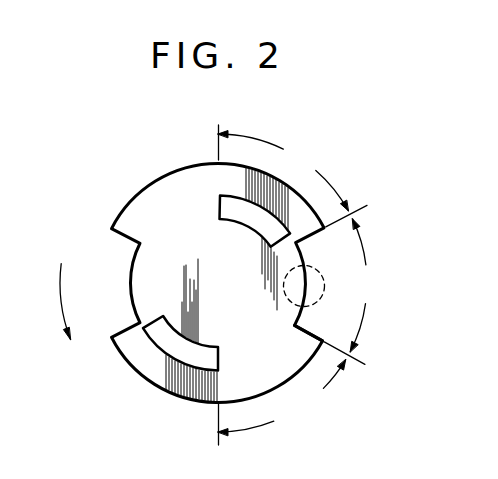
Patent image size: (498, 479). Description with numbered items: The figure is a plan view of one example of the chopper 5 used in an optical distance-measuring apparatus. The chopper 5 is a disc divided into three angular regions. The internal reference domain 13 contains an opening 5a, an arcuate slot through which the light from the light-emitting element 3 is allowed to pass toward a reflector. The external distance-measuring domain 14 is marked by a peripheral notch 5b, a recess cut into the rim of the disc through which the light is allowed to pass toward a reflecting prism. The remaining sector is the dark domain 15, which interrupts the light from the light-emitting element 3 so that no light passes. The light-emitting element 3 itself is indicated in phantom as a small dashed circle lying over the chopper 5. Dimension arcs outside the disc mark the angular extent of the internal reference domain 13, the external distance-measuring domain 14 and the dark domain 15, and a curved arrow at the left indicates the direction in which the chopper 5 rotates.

The light-emitting element 3 is at (315, 266).
The chopper 5 is at (188, 398).
The opening 5a is at (239, 199).
The peripheral notch 5b is at (298, 325).
The internal reference domain 13 is at (292, 179).
The external distance-measuring domain 14 is at (349, 292).
The dark domain 15 is at (282, 398).